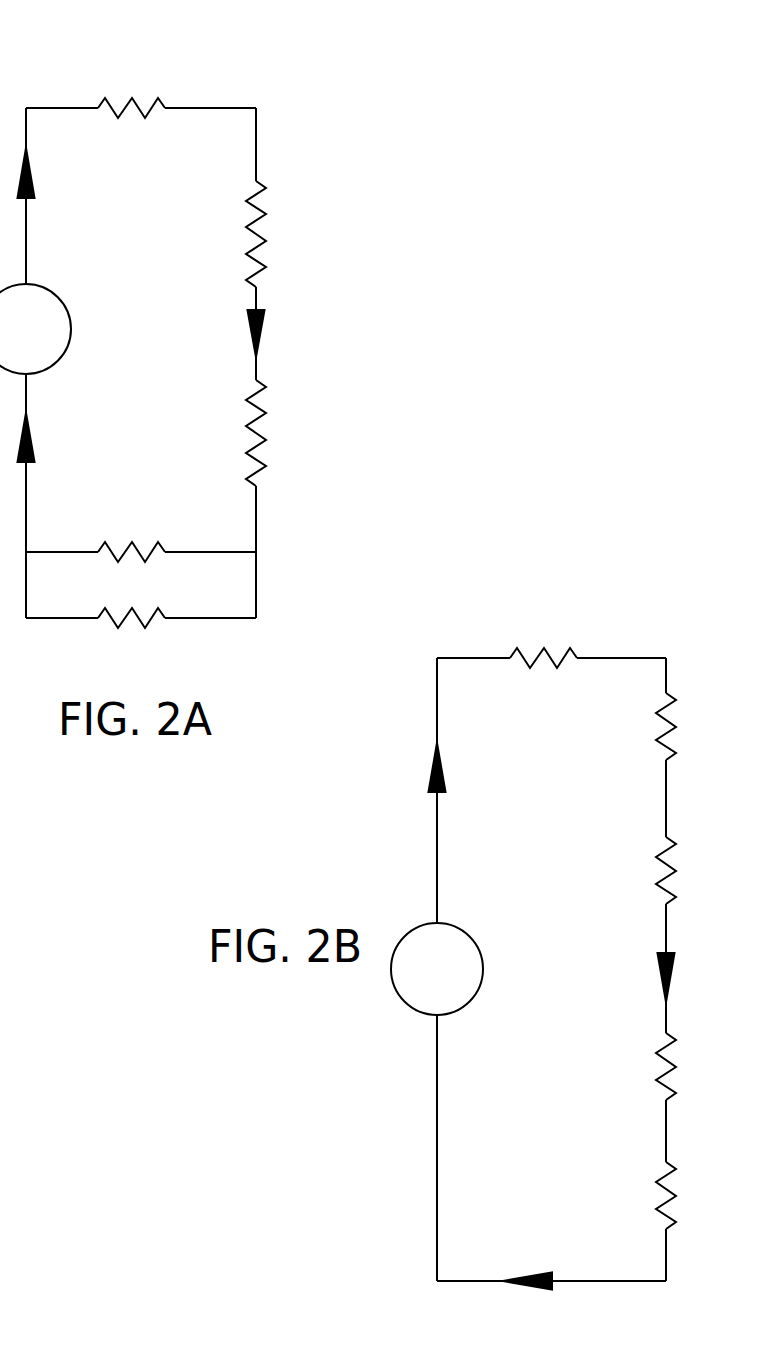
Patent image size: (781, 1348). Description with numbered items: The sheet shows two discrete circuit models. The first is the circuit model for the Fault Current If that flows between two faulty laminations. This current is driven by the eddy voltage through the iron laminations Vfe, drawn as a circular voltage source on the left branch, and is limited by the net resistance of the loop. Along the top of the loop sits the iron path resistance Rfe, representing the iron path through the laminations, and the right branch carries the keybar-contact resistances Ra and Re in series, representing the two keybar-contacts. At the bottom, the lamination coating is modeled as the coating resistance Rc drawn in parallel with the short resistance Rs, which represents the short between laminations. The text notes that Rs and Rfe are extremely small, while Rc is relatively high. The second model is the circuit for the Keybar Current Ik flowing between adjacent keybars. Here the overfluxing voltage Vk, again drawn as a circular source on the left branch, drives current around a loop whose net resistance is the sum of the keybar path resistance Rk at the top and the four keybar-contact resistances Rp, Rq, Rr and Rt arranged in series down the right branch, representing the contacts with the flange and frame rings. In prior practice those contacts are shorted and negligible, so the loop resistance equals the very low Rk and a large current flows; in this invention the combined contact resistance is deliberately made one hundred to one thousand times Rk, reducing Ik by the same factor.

In FIG. 2A, the iron path resistance Rfe is at (131, 71).
In FIG. 2A, the Fault Current If is at (43, 173).
In FIG. 2A, the keybar-contact resistance a Ra is at (285, 234).
In FIG. 2A, the eddy voltage through iron laminations Vfe is at (35, 329).
In FIG. 2A, the keybar-contact resistance e Re is at (284, 433).
In FIG. 2A, the lamination coating resistance Rc is at (131, 527).
In FIG. 2A, the short resistance Rs is at (131, 644).
In FIG. 2B, the keybar path resistance Rk is at (543, 627).
In FIG. 2B, the Keybar Current Ik is at (459, 767).
In FIG. 2B, the keybar-contact resistance p Rp is at (693, 726).
In FIG. 2B, the keybar-contact resistance q Rq is at (693, 870).
In FIG. 2B, the overfluxing voltage Vk is at (437, 969).
In FIG. 2B, the keybar-contact resistance r Rr is at (692, 1066).
In FIG. 2B, the keybar-contact resistance t Rt is at (688, 1195).